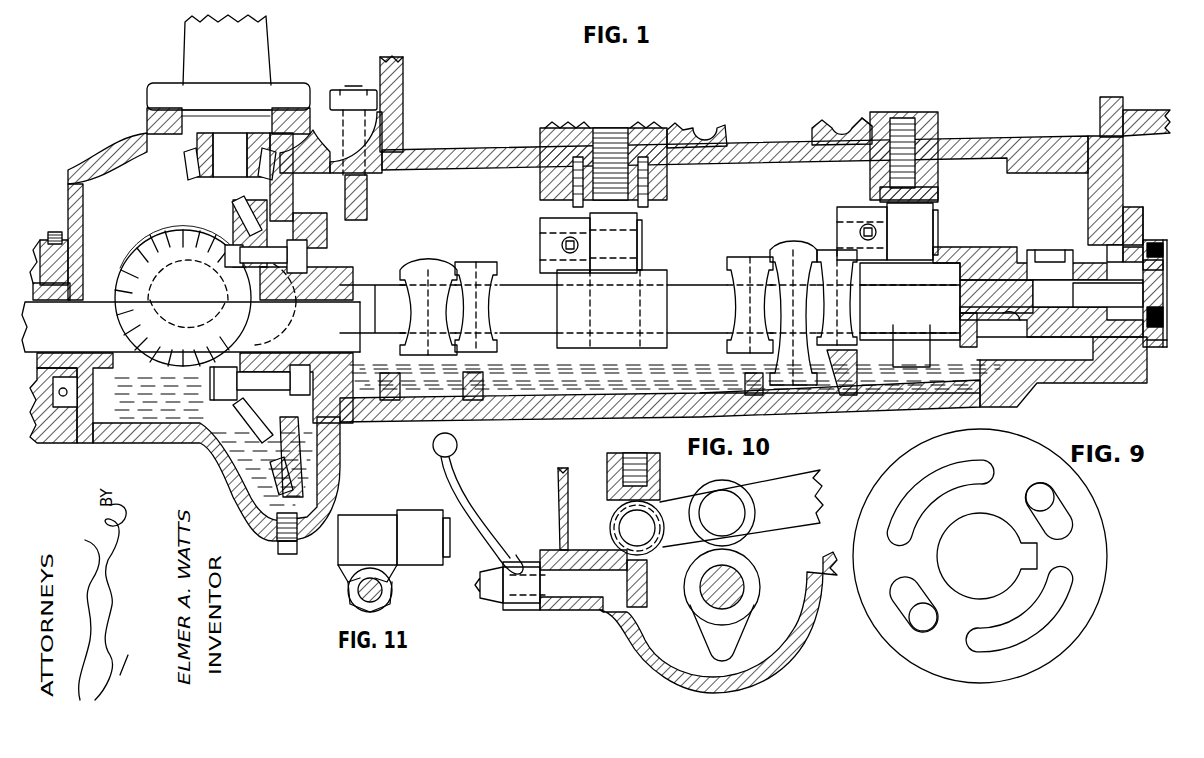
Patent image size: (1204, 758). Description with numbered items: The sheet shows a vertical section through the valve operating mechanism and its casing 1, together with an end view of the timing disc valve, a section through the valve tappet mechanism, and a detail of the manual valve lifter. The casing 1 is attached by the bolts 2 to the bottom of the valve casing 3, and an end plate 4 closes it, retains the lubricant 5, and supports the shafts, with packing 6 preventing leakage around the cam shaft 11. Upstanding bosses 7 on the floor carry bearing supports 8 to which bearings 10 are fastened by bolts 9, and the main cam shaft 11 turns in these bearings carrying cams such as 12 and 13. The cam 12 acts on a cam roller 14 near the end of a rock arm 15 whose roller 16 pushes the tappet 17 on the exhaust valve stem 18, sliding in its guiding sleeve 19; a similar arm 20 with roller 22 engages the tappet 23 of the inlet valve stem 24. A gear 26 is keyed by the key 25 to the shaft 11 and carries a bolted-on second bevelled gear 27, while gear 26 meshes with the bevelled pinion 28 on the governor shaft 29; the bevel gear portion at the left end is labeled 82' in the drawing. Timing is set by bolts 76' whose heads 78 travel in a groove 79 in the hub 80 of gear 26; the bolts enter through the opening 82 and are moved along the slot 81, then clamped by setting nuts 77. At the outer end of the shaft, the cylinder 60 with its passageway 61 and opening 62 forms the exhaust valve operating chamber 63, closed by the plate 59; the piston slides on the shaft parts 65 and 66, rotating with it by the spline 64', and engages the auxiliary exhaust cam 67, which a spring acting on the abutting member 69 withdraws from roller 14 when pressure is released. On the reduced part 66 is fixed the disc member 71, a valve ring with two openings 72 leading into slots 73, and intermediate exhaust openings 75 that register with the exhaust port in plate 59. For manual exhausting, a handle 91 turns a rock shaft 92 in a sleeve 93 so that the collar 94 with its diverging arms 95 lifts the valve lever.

In FIG. 1, the casing 1 is at (655, 410).
In FIG. 1, the bolts 2 is at (358, 88).
In FIG. 1, the valve casing 3 is at (447, 150).
In FIG. 1, the end plate 4 is at (75, 415).
In FIG. 1, the lubricant 5 is at (578, 400).
In FIG. 1, the packing 6 is at (94, 272).
In FIG. 1, the upstanding bosses 7 is at (850, 360).
In FIG. 1, the bearing supports 8 is at (733, 357).
In FIG. 1, the bolts 9 is at (472, 268).
In FIG. 1, the bearings 10 is at (428, 272).
In FIG. 1, the main cam shaft 11 is at (688, 288).
In FIG. 10, the main cam shaft 11 is at (735, 580).
In FIG. 1, the cam 12 is at (930, 348).
In FIG. 10, the cam 12 is at (734, 632).
In FIG. 1, the cam 13 is at (650, 268).
In FIG. 10, the cam roller 14 is at (724, 483).
In FIG. 1, the rock arm 15 is at (845, 212).
In FIG. 11, the rock arm 15 is at (380, 518).
In FIG. 10, the rock arm 15 is at (813, 480).
In FIG. 1, the roller 16 is at (925, 235).
In FIG. 11, the roller 16 is at (422, 518).
In FIG. 10, the roller 16 is at (610, 525).
In FIG. 1, the tappet 17 is at (938, 192).
In FIG. 10, the tappet 17 is at (607, 481).
In FIG. 1, the valve stem 18 is at (905, 125).
In FIG. 1, the guiding sleeve 19 is at (940, 116).
In FIG. 1, the arm 20 is at (540, 235).
In FIG. 1, the roller 22 is at (628, 242).
In FIG. 1, the tappet 23 is at (642, 200).
In FIG. 1, the valve stem 24 is at (612, 132).
In FIG. 1, the key 25 is at (290, 312).
In FIG. 1, the gear 26 is at (295, 190).
In FIG. 1, the second bevelled gear 27 is at (244, 218).
In FIG. 1, the bevelled pinion 28 is at (190, 164).
In FIG. 1, the shaft 29 is at (232, 172).
In FIG. 1, the plate 59 is at (1163, 267).
In FIG. 1, the cylinder 60 is at (1132, 208).
In FIG. 1, the passageway 61 is at (1132, 252).
In FIG. 1, the opening 62 is at (1130, 228).
In FIG. 1, the exhaust valve operating chamber 63 is at (1107, 252).
In FIG. 1, the spline 64' is at (1035, 361).
In FIG. 1, the part of camshaft 65 is at (1045, 280).
In FIG. 1, the reduced part 66 is at (1083, 297).
In FIG. 1, the auxiliary exhaust cam 67 is at (967, 250).
In FIG. 1, the abutting member 69 is at (860, 262).
In FIG. 1, the disc member 71 is at (1168, 287).
In FIG. 9, the disc member 71 is at (928, 452).
In FIG. 1, the openings 72 is at (1167, 280).
In FIG. 9, the openings 72 is at (1037, 492).
In FIG. 1, the slots 73 is at (1167, 339).
In FIG. 9, the slots 73 is at (1063, 529).
In FIG. 9, the exhaust openings 75 is at (920, 492).
In FIG. 1, the bolts 76' is at (303, 447).
In FIG. 1, the setting nuts 77 is at (227, 397).
In FIG. 1, the heads 78 is at (300, 395).
In FIG. 1, the groove 79 is at (265, 385).
In FIG. 1, the hub 80 is at (326, 232).
In FIG. 1, the slot 81 is at (320, 475).
In FIG. 1, the opening 82 is at (304, 243).
In FIG. 1, the bevel gear 82' is at (183, 281).
In FIG. 10, the handle 91 is at (463, 490).
In FIG. 11, the rock shaft 92 is at (380, 595).
In FIG. 10, the rock shaft 92 is at (548, 575).
In FIG. 10, the sleeve 93 is at (560, 603).
In FIG. 11, the collar 94 is at (350, 600).
In FIG. 10, the collar 94 is at (640, 602).
In FIG. 11, the diverging arms 95 is at (340, 580).